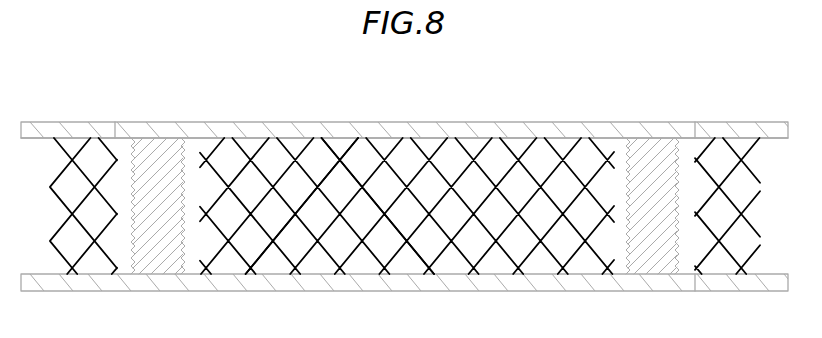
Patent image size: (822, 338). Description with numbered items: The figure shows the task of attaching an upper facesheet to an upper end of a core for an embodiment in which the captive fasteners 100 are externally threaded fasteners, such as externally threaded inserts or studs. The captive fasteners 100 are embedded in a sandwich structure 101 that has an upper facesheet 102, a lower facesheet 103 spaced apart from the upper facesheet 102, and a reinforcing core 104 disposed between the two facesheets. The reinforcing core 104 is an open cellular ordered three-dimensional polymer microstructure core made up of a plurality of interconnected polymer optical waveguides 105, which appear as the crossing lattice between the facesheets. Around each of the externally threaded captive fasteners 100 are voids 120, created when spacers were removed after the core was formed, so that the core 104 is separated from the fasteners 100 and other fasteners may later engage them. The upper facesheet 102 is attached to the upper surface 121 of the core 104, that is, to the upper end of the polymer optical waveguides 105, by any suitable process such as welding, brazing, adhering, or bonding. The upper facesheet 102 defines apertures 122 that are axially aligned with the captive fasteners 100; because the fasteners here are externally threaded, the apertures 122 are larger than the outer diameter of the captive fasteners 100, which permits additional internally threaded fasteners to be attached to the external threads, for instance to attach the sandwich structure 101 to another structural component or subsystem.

The captive fastener 100 is at (166, 152).
The sandwich structure 101 is at (287, 79).
The upper facesheet 102 is at (458, 130).
The lower facesheet 103 is at (460, 280).
The reinforcing core 104 is at (486, 252).
The polymer optical waveguides 105 is at (360, 232).
The void 120 is at (190, 247).
The upper surface 121 is at (417, 137).
The aperture 122 is at (158, 130).